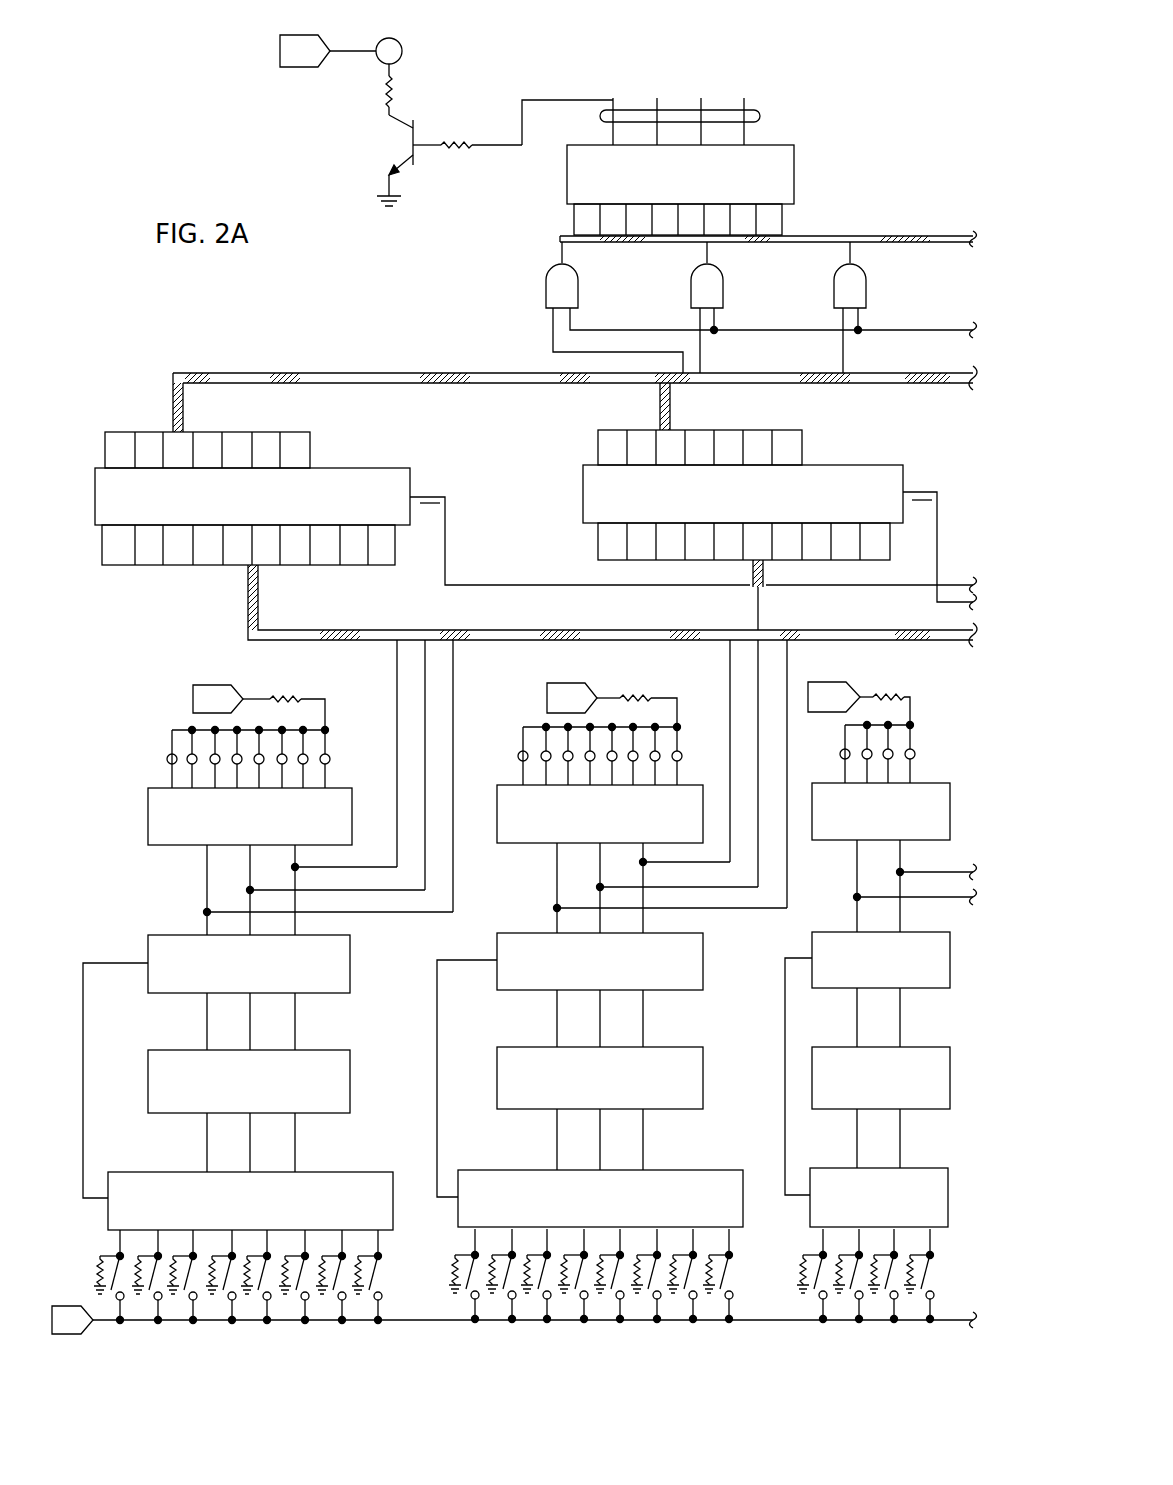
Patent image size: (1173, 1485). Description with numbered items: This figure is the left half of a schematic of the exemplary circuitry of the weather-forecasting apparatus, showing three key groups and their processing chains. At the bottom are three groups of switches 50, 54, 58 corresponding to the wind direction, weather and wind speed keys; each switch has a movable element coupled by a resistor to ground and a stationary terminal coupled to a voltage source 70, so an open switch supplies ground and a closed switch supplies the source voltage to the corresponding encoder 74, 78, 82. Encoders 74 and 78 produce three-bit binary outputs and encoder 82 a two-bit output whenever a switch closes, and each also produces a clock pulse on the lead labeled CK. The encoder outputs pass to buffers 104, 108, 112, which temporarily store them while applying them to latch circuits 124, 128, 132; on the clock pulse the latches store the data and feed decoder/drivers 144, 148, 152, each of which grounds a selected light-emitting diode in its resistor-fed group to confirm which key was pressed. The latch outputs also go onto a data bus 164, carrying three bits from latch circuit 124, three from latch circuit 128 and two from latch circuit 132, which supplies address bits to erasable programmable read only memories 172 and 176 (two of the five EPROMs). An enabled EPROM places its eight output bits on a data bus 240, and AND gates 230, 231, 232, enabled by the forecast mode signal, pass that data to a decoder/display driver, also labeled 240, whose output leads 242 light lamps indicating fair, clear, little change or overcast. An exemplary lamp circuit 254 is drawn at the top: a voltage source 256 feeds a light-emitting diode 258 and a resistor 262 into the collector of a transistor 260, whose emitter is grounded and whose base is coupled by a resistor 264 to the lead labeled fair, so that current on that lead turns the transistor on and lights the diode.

The light-emitting diode 258 is at (401, 41).
The voltage source 256 is at (280, 63).
The resistor 262 is at (385, 90).
The transistor 260 is at (416, 120).
The lamp lighting circuit 254 is at (380, 131).
The resistor 264 is at (472, 156).
The output leads 242 is at (760, 116).
The data bus / decoder/display driver 240 is at (794, 175).
The AND gate 230 is at (579, 287).
The AND gate 231 is at (724, 287).
The AND gate 232 is at (867, 287).
The erasable programmable read only memory (EPROM) 172 is at (385, 468).
The erasable programmable read only memory (EPROM) 176 is at (887, 465).
The data bus 164 is at (933, 640).
The decoder/driver 144 is at (148, 818).
The decoder/driver 148 is at (525, 843).
The decoder/driver 152 is at (840, 840).
The latch circuit 124 is at (350, 975).
The latch circuit 128 is at (703, 975).
The latch circuit 132 is at (935, 988).
The buffer 104 is at (350, 1078).
The buffer 108 is at (703, 1076).
The buffer 112 is at (835, 1109).
The encoder 74 is at (355, 1172).
The encoder 78 is at (500, 1170).
The encoder 82 is at (945, 1168).
The switches 50 is at (396, 1277).
The switches 54 is at (748, 1275).
The switches 58 is at (935, 1280).
The voltage source 70 is at (70, 1306).